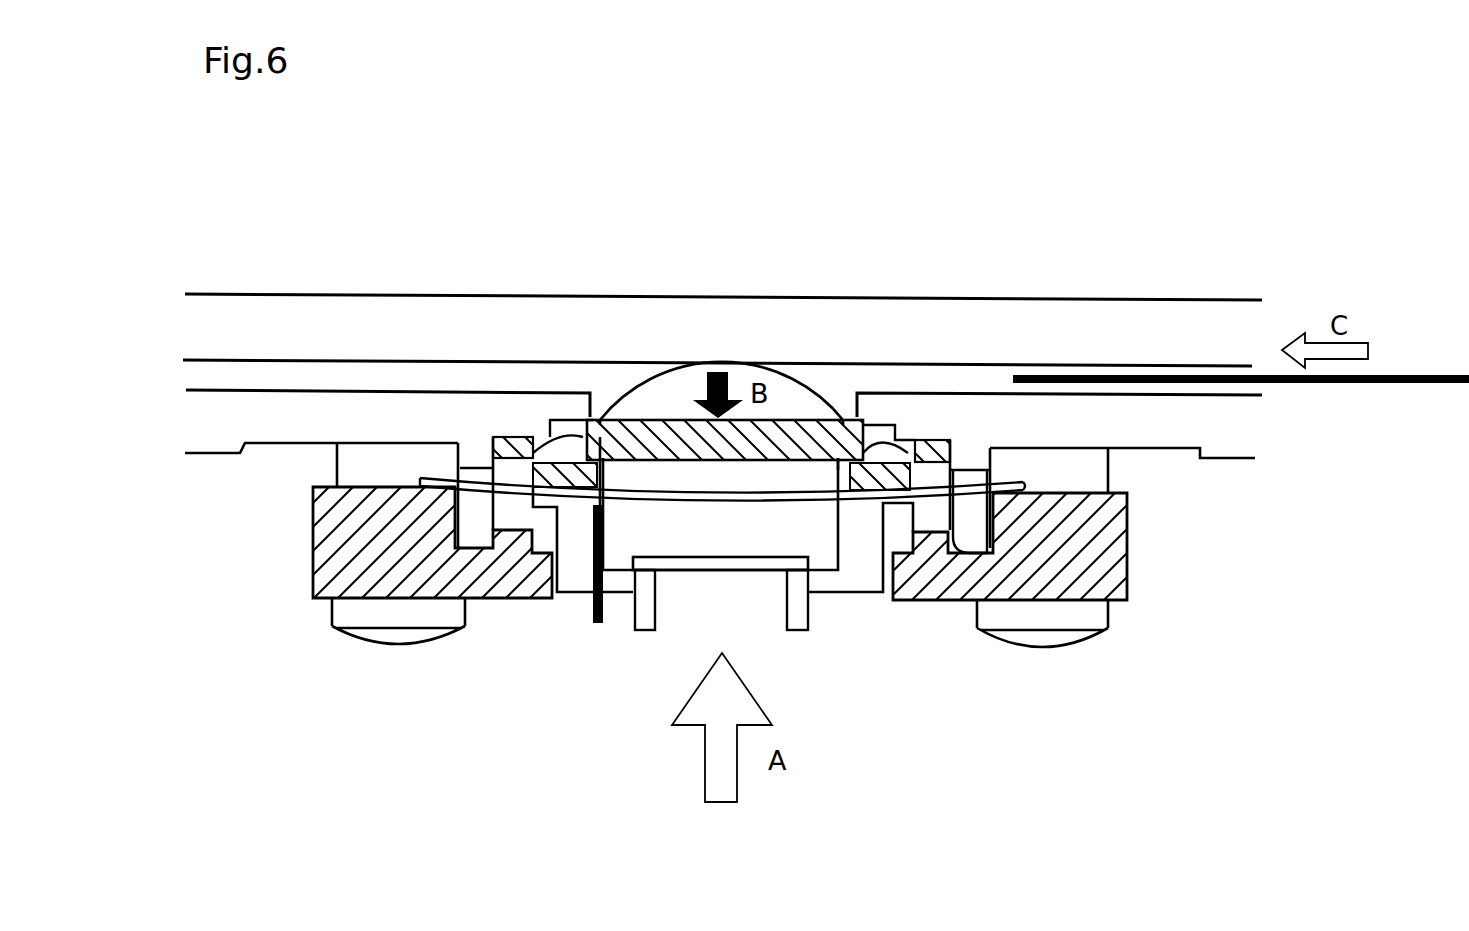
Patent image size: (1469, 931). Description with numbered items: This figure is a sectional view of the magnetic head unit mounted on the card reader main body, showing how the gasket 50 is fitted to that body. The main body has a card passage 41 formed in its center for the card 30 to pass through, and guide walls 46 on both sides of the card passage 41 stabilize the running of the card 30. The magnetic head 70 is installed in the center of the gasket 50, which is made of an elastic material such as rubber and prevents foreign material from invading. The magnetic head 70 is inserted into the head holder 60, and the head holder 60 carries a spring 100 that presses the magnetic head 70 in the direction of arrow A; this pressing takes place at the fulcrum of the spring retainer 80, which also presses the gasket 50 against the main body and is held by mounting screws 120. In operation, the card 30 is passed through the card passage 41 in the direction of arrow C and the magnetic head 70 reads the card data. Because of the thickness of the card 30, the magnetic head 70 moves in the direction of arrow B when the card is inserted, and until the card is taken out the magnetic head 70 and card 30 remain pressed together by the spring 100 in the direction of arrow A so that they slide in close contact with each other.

The card 30 is at (1275, 375).
The card passage 41 is at (493, 377).
The guide wall 46 is at (358, 325).
The gasket 50 is at (780, 430).
The head holder 60 is at (867, 542).
The magnetic head 70 is at (670, 398).
The spring retainer 80 is at (1083, 548).
The spring 100 is at (723, 490).
The mounting screw 120 is at (1035, 613).